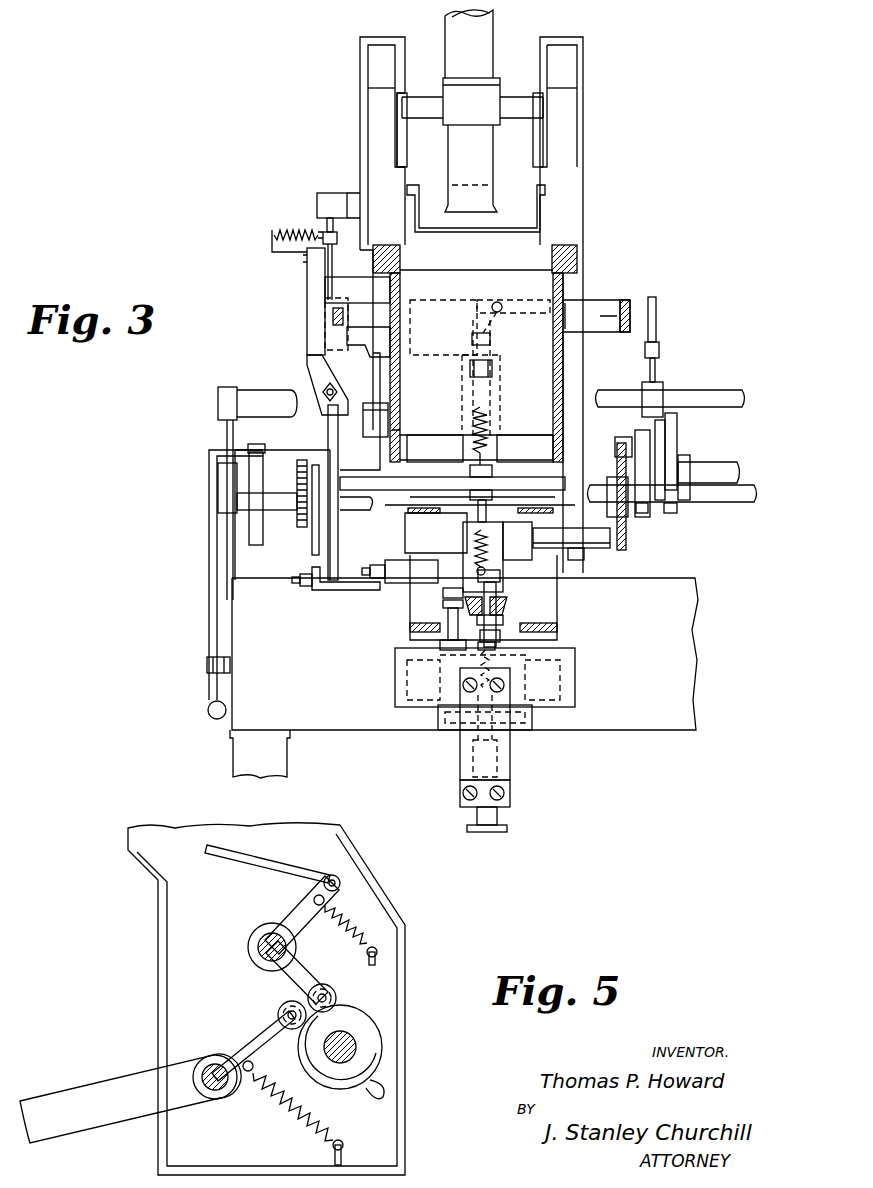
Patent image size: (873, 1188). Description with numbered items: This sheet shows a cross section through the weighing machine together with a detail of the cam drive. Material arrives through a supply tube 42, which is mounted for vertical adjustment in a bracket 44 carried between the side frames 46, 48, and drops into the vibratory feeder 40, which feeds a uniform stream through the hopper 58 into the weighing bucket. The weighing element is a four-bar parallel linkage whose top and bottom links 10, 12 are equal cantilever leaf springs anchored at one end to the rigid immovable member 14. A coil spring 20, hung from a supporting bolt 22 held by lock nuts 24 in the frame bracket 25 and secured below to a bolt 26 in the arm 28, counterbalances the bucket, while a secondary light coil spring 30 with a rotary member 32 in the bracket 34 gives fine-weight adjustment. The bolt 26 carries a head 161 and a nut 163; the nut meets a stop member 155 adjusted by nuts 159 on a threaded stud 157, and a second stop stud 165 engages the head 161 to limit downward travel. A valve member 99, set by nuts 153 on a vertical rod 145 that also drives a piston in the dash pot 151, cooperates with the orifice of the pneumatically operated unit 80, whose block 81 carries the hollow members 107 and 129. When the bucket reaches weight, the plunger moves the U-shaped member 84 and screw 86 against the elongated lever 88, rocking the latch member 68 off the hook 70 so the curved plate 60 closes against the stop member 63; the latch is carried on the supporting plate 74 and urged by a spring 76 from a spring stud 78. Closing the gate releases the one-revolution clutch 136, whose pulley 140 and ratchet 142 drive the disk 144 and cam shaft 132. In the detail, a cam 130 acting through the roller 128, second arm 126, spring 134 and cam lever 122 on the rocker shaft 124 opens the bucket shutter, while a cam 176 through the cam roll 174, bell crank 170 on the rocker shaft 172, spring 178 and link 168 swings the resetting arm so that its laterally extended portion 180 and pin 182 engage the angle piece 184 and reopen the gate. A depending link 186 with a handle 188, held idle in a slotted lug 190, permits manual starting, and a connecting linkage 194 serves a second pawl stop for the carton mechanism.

In FIG. 3, the top horizontal link 10 is at (412, 515).
In FIG. 3, the bottom horizontal link 12 is at (410, 624).
In FIG. 3, the rigid immovable member 14 is at (500, 577).
In FIG. 3, the coil spring 20 is at (490, 445).
In FIG. 3, the supporting bolt 22 is at (492, 403).
In FIG. 3, the lock nuts 24 is at (494, 370).
In FIG. 3, the bracket 25 is at (462, 406).
In FIG. 3, the bolt 26 is at (498, 595).
In FIG. 3, the bracket 28 is at (557, 628).
In FIG. 3, the secondary light coil spring 30 is at (492, 664).
In FIG. 3, the rotary member 32 is at (500, 763).
In FIG. 3, the bracket 34 is at (575, 694).
In FIG. 3, the vibratory feeder 40 is at (545, 203).
In FIG. 3, the supply tube 42 is at (493, 30).
In FIG. 3, the bracket 44 is at (517, 96).
In FIG. 3, the side frame 46 is at (372, 104).
In FIG. 3, the side frame 48 is at (573, 104).
In FIG. 3, the hopper 58 is at (566, 372).
In FIG. 3, the curved plate 60 is at (376, 380).
In FIG. 3, the stop member 63 is at (362, 417).
In FIG. 3, the latch member 68 is at (325, 312).
In FIG. 3, the hook 70 is at (341, 323).
In FIG. 3, the supporting plate 74 is at (307, 283).
In FIG. 3, the spring 76 is at (298, 235).
In FIG. 3, the spring stud 78 is at (270, 237).
In FIG. 3, the pneumatically operated unit 80 is at (518, 541).
In FIG. 3, the block 81 is at (463, 546).
In FIG. 3, the U-shaped member 84 is at (345, 590).
In FIG. 3, the screw 86 is at (302, 588).
In FIG. 3, the elongated lever 88 is at (338, 520).
In FIG. 3, the valve member 99 is at (452, 481).
In FIG. 3, the hollow member 107 is at (580, 552).
In FIG. 3, the cam lever 122 is at (627, 545).
In FIG. 5, the cam lever 122 is at (123, 1083).
In FIG. 3, the rocker shaft 124 is at (727, 500).
In FIG. 5, the rocker shaft 124 is at (208, 1062).
In FIG. 3, the second arm 126 is at (612, 462).
In FIG. 5, the second arm 126 is at (250, 1032).
In FIG. 3, the roller 128 is at (640, 435).
In FIG. 5, the roller 128 is at (285, 1003).
In FIG. 3, the hollow member 129 is at (400, 565).
In FIG. 3, the cam 130 is at (645, 516).
In FIG. 5, the cam 130 is at (380, 1033).
In FIG. 5, the cam shaft 132 is at (357, 1050).
In FIG. 5, the spring 134 is at (300, 1120).
In FIG. 3, the one-revolution clutch 136 is at (283, 415).
In FIG. 3, the pulley 140 is at (268, 447).
In FIG. 3, the ratchet 142 is at (300, 522).
In FIG. 3, the disk 144 is at (308, 530).
In FIG. 3, the vertical rod 145 is at (486, 510).
In FIG. 3, the dash pot 151 is at (532, 725).
In FIG. 3, the nuts 153 is at (470, 470).
In FIG. 3, the stop member 155 is at (443, 603).
In FIG. 3, the threaded stud 157 is at (440, 645).
In FIG. 3, the nuts 159 is at (411, 572).
In FIG. 3, the head 161 is at (503, 623).
In FIG. 3, the nut 163 is at (508, 606).
In FIG. 3, the second stop stud 165 is at (470, 650).
In FIG. 3, the link 168 is at (658, 302).
In FIG. 5, the link 168 is at (237, 857).
In FIG. 3, the bell crank 170 is at (664, 390).
In FIG. 5, the bell crank 170 is at (300, 900).
In FIG. 3, the rocker shaft 172 is at (695, 392).
In FIG. 5, the rocker shaft 172 is at (250, 936).
In FIG. 3, the cam roll 174 is at (680, 428).
In FIG. 5, the cam roll 174 is at (336, 993).
In FIG. 3, the cam 176 is at (690, 463).
In FIG. 5, the cam 176 is at (385, 1095).
In FIG. 5, the spring 178 is at (350, 922).
In FIG. 3, the laterally extended portion 180 is at (502, 304).
In FIG. 3, the pin 182 is at (492, 330).
In FIG. 3, the angle piece 184 is at (458, 303).
In FIG. 3, the depending link 186 is at (209, 608).
In FIG. 3, the handle 188 is at (207, 712).
In FIG. 3, the slotted lug 190 is at (207, 665).
In FIG. 3, the connecting linkage 194 is at (312, 540).